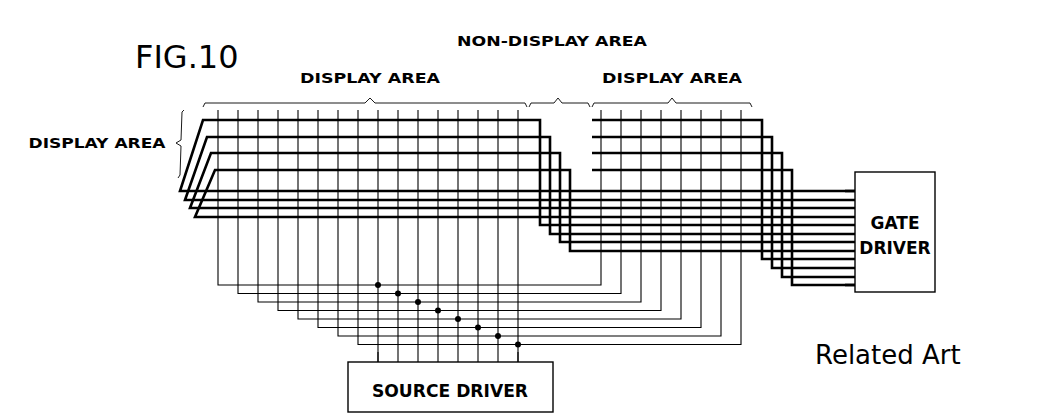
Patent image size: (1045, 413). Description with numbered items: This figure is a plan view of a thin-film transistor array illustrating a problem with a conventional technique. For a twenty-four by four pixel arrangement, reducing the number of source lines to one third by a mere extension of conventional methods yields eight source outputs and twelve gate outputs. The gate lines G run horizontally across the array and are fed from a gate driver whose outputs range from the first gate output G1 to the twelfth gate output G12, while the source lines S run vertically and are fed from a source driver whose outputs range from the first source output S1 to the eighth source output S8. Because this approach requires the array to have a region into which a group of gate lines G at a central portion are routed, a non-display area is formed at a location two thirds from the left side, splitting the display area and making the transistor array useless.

The gate line G is at (201, 117).
The source line S is at (208, 258).
The first gate driver output G1 is at (859, 184).
The twelfth gate driver output G12 is at (863, 286).
The first source driver output S1 is at (378, 366).
The eighth source driver output S8 is at (523, 366).